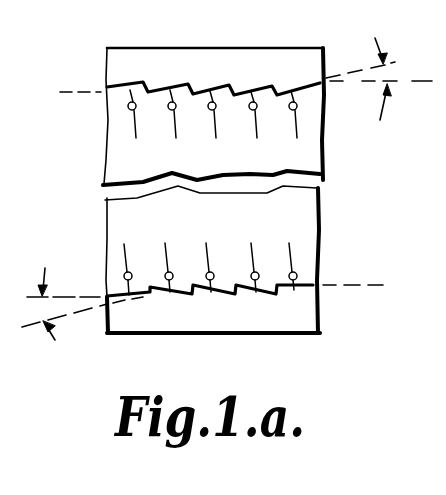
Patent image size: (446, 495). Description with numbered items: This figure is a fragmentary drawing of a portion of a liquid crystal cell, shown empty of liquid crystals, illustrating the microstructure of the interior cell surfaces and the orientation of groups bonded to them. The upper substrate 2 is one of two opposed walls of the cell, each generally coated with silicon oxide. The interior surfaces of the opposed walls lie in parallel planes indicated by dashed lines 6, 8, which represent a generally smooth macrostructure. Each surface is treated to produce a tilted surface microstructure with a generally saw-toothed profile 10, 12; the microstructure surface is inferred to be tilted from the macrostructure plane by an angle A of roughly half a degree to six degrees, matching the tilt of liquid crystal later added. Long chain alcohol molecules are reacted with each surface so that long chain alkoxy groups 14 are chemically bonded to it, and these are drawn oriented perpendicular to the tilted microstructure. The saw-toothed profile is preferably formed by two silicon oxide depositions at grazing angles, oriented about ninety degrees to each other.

The upper substrate 2 is at (155, 48).
The dashed line 6 is at (397, 81).
The dashed line 8 is at (383, 285).
The saw-toothed profile 10 is at (237, 97).
The saw-toothed profile 12 is at (232, 280).
The alkoxy groups 14 is at (133, 125).